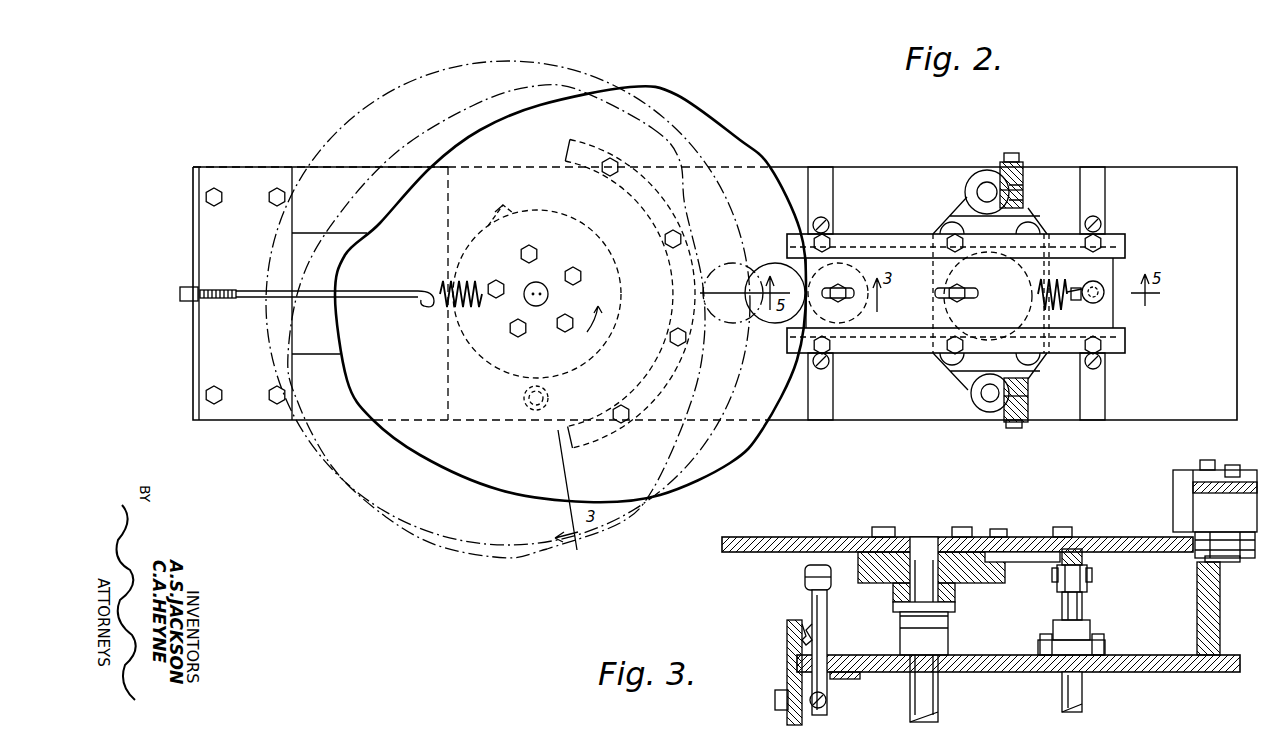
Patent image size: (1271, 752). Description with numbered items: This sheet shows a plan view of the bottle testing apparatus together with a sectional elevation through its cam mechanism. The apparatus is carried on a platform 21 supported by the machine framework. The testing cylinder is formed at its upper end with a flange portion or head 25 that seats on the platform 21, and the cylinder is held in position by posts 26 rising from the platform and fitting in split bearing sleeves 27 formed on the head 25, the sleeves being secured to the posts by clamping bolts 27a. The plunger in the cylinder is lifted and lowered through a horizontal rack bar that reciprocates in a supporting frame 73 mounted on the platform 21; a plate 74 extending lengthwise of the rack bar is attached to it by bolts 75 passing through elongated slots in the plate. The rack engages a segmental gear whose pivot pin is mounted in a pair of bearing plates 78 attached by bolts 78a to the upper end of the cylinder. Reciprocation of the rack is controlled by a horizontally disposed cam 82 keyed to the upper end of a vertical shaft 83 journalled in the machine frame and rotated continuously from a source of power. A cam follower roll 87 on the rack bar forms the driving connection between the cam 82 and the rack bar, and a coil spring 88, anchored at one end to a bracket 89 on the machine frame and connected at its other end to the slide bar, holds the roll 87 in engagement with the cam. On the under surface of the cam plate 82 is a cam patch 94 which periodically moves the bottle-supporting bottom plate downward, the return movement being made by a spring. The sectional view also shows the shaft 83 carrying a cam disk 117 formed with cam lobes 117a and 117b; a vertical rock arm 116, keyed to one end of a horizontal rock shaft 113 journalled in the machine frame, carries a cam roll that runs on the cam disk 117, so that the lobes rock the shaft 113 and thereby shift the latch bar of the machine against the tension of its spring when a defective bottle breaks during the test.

In FIG. 2, the platform 21 is at (313, 422).
In FIG. 3, the platform 21 is at (1148, 670).
In FIG. 2, the head 25 is at (955, 210).
In FIG. 2, the posts 26 is at (987, 182).
In FIG. 2, the split bearing sleeves 27 is at (976, 181).
In FIG. 2, the clamping bolts 27a is at (1012, 160).
In FIG. 2, the supporting frame 73 is at (1106, 213).
In FIG. 3, the supporting frame 73 is at (1183, 521).
In FIG. 2, the plate 74 is at (1102, 316).
In FIG. 3, the plate 74 is at (1205, 506).
In FIG. 2, the bolts 75 is at (964, 291).
In FIG. 2, the bearing plates 78 is at (978, 376).
In FIG. 2, the bolts 78a is at (978, 362).
In FIG. 2, the cam 82 is at (676, 98).
In FIG. 3, the cam 82 is at (1096, 540).
In FIG. 2, the vertical shaft 83 is at (540, 284).
In FIG. 3, the vertical shaft 83 is at (940, 704).
In FIG. 2, the cam follower roll 87 is at (862, 306).
In FIG. 3, the cam follower roll 87 is at (1246, 560).
In FIG. 2, the coil spring 88 is at (478, 282).
In FIG. 2, the bracket 89 is at (197, 365).
In FIG. 2, the cam patch 94 is at (665, 371).
In FIG. 3, the cam patch 94 is at (1082, 553).
In FIG. 3, the rock shaft 113 is at (824, 710).
In FIG. 3, the rock arm 116 is at (828, 648).
In FIG. 2, the cam disk 117 is at (600, 340).
In FIG. 3, the cam disk 117 is at (882, 584).
In FIG. 2, the cam lobe 117a is at (548, 397).
In FIG. 3, the cam lobe 117a is at (835, 570).
In FIG. 2, the cam lobe 117b is at (507, 211).